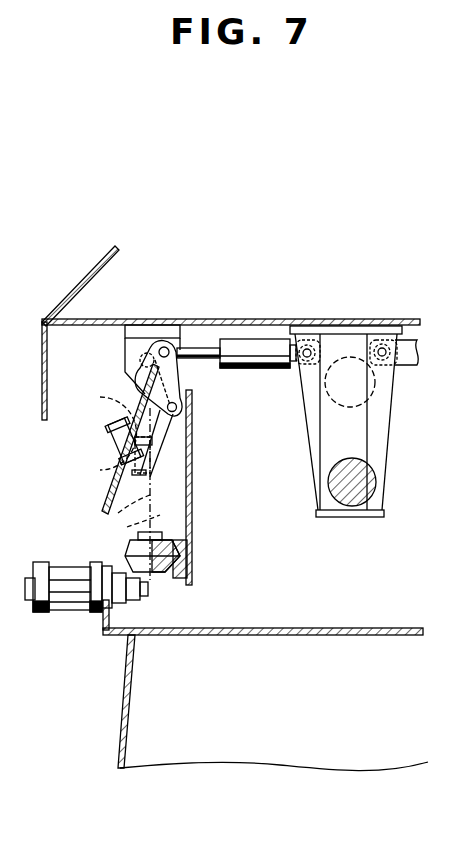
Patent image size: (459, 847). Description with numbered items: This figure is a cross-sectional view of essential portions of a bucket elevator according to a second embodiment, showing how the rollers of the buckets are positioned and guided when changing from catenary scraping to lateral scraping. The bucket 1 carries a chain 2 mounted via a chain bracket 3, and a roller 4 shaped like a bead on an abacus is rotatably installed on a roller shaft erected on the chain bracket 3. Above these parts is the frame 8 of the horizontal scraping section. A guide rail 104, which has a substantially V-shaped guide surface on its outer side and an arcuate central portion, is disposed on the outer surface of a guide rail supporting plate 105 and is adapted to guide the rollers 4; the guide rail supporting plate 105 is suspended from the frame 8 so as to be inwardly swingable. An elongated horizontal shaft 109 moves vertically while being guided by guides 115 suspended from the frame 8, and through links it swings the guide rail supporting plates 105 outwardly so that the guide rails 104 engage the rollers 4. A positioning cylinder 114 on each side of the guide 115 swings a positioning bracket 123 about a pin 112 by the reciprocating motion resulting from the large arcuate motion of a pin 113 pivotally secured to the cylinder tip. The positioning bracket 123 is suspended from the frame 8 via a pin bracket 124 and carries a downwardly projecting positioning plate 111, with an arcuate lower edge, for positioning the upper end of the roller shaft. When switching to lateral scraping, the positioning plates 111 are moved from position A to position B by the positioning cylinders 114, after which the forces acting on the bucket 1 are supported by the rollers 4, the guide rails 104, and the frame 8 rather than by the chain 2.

The bucket 1 is at (122, 740).
The chain 2 is at (68, 612).
The chain bracket 3 is at (105, 620).
The roller 4 is at (155, 572).
The frame of the horizontal scraping section 8 is at (78, 287).
The guide rail 104 is at (182, 578).
The guide rail supporting plate 105 is at (192, 495).
The horizontal shaft 109 is at (360, 478).
The positioning plate 111 is at (112, 456).
The pin 112 is at (178, 407).
The pin 113 is at (161, 342).
The positioning cylinder 114 is at (265, 339).
The guide 115 is at (306, 438).
The positioning bracket 123 is at (136, 412).
The pin bracket 124 is at (127, 349).
The position A is at (125, 518).
The position B is at (142, 522).